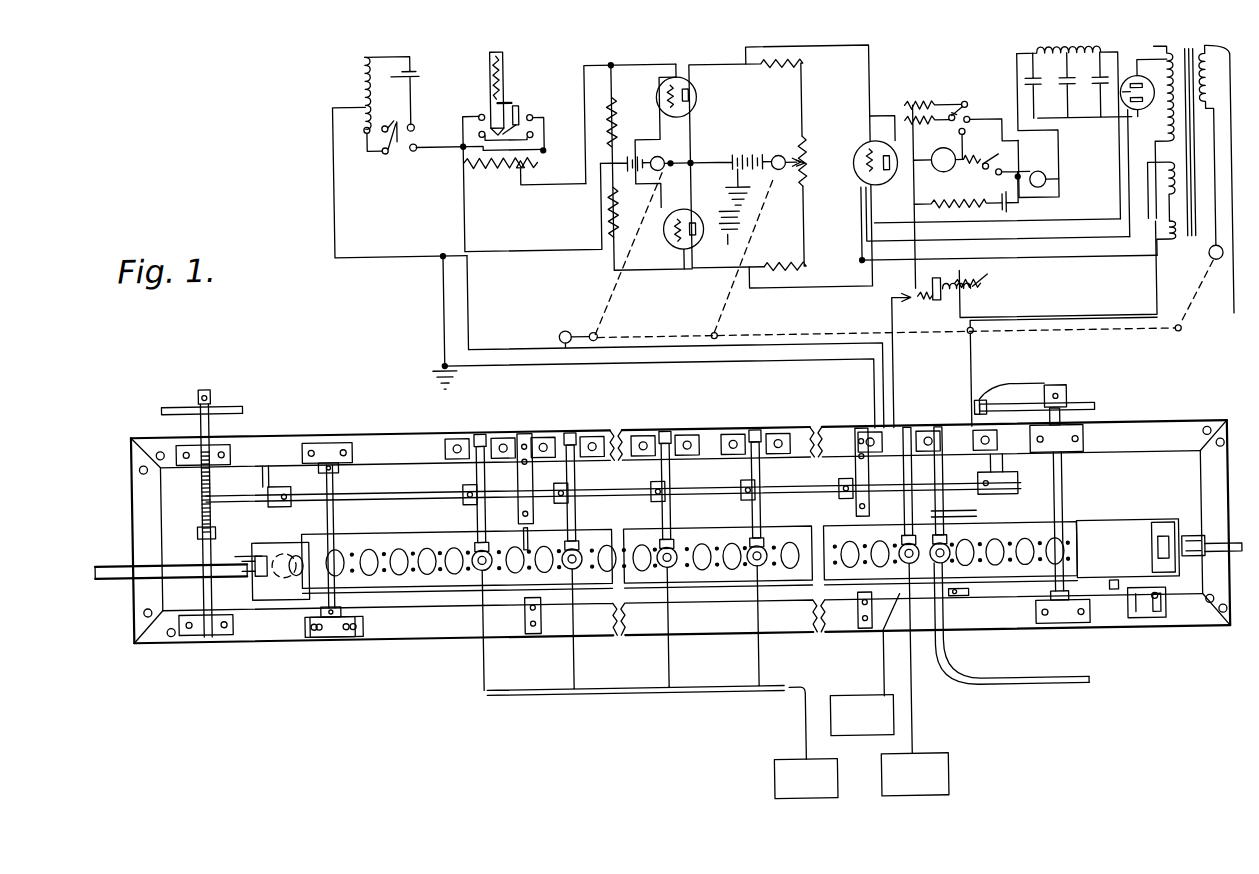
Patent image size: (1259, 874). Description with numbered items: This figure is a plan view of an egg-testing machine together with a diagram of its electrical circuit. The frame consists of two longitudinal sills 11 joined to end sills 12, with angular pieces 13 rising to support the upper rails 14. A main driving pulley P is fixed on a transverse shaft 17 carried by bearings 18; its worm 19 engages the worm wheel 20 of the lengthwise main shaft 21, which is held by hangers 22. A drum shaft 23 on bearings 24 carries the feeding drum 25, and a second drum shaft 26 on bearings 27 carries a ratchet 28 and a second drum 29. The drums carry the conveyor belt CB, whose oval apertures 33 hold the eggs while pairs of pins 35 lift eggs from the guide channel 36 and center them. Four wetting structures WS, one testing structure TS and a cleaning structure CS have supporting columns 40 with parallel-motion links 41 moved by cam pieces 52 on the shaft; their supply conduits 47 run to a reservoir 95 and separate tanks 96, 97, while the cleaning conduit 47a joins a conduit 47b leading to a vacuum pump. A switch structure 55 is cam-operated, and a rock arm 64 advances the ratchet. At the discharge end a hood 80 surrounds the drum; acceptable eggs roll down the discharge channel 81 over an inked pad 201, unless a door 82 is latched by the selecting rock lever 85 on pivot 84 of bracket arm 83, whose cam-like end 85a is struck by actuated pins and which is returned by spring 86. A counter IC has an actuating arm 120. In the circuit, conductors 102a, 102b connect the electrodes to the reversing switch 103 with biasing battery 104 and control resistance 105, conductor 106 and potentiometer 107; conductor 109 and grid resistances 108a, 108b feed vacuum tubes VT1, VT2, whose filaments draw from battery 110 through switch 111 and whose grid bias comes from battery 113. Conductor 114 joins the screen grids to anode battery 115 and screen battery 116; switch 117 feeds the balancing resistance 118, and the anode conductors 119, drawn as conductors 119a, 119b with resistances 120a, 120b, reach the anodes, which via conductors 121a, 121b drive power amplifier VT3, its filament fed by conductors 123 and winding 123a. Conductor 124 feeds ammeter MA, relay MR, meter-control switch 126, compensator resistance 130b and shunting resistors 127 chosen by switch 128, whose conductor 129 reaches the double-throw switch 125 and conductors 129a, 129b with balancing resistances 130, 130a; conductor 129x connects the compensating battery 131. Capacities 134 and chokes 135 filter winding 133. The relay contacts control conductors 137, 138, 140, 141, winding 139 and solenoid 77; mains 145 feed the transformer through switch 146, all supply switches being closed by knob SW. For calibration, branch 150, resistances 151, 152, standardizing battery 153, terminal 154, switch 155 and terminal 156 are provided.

The longitudinal sills 11 is at (378, 434).
The end sills 12 is at (150, 478).
The angular pieces 13 is at (517, 474).
The upper rails 14 is at (455, 531).
The transverse shaft 17 is at (212, 426).
The bearings 18 is at (196, 440).
The worm 19 is at (200, 506).
The worm wheel 20 is at (196, 530).
The main shaft 21 is at (358, 497).
The hangers 22 is at (266, 486).
The drum shaft 23 is at (334, 476).
The bearings 24 is at (327, 438).
The feeding drum 25 is at (261, 547).
The second drum shaft 26 is at (1062, 486).
The bearings 27 is at (1084, 446).
The ratchet 28 is at (1096, 414).
The second drum 29 is at (975, 519).
The apertures 33 is at (283, 546).
The pins 35 is at (258, 556).
The guide channel 36 is at (202, 570).
The supporting columns 40 is at (482, 432).
The parallel-motion links 41 is at (575, 476).
The supply conduit 47 is at (642, 695).
The conduit 47a is at (960, 666).
The conduit 47b is at (1060, 690).
The cam pieces 52 is at (656, 502).
The switch structure 55 is at (910, 468).
The rock arm 64 is at (1040, 390).
The solenoid 77 is at (958, 603).
The hood 80 is at (1127, 548).
The discharge channel 81 is at (1188, 544).
The door 82 is at (1155, 530).
The bracket arm 83 is at (1128, 628).
The pivot 84 is at (1130, 594).
The selecting rock lever 85 is at (1158, 624).
The cam-like end 85a is at (1110, 612).
The return spring 86 is at (1150, 630).
The reservoir 95 is at (806, 779).
The tank 96 is at (915, 774).
The tank 97 is at (862, 715).
The conductor 102a is at (530, 346).
The conductor 102b is at (540, 254).
The double-pole double-throw switch 103 is at (525, 110).
The biasing battery 104 is at (512, 98).
The control resistance 105 is at (510, 60).
The conductor 106 is at (549, 130).
The potentiometer 107 is at (503, 166).
The grid controlling resistance 108a is at (622, 104).
The grid controlling resistance 108b is at (612, 228).
The conductor 109 is at (550, 184).
The filament battery 110 is at (626, 112).
The control switch 111 is at (678, 162).
The grid biasing battery 113 is at (590, 183).
The conductor 114 is at (670, 166).
The anode battery 115 is at (736, 170).
The screen grid biasing battery 116 is at (748, 230).
The switch 117 is at (785, 157).
The adjusting or balancing resistance 118 is at (811, 168).
The resistance 119 is at (811, 168).
The conductor 119a is at (810, 100).
The conductor 119b is at (810, 205).
The actuating arm 120 is at (391, 546).
The anode circuit resistance 120a is at (747, 163).
The anode circuit resistance 120b is at (781, 228).
The conductor 121a is at (836, 114).
The conductor 121b is at (840, 291).
The filament circuit conductors 123 is at (1066, 230).
The transformer winding 123a is at (1158, 265).
The conductor 124 is at (876, 126).
The double-throw switch 125 is at (998, 181).
The meter-control switch 126 is at (1040, 168).
The shunting resistors 127 is at (922, 108).
The switch 128 is at (962, 110).
The conductor 129 is at (975, 124).
The conductor 129a is at (1024, 150).
The conductor 129b is at (1000, 288).
The conductor 129x is at (1023, 80).
The resistance 130 is at (984, 152).
The resistance 130a is at (994, 296).
The compensator resistance 130b is at (966, 211).
The compensating battery 131 is at (1016, 220).
The winding 133 is at (1170, 60).
The capacities 134 is at (1047, 93).
The chokes 135 is at (1075, 58).
The conductor 137 is at (975, 349).
The conductor 138 is at (1084, 323).
The winding 139 is at (1170, 176).
The conductor 140 is at (896, 350).
The conductor 141 is at (948, 440).
The current mains 145 is at (1184, 340).
The switch 146 is at (1211, 263).
The branch 150 is at (412, 253).
The resistance 151 is at (370, 72).
The resistance 152 is at (338, 106).
The standardizing battery 153 is at (424, 72).
The terminal 154 is at (420, 121).
The double-pole switch 155 is at (396, 150).
The terminal 156 is at (418, 150).
The inked pad 201 is at (1214, 568).
The main driving pulley P is at (226, 400).
The knob SW is at (577, 326).
The conveyor belt CB is at (276, 596).
The first counting mechanism IC is at (345, 633).
The wetting structures WS is at (477, 570).
The cleaning structure CS is at (960, 650).
The testing structure TS is at (909, 697).
The ammeter MA is at (938, 147).
The relay MR is at (1037, 269).
The vacuum tube VT1 is at (699, 90).
The vacuum tube VT2 is at (669, 239).
The power amplifier VT3 is at (994, 193).